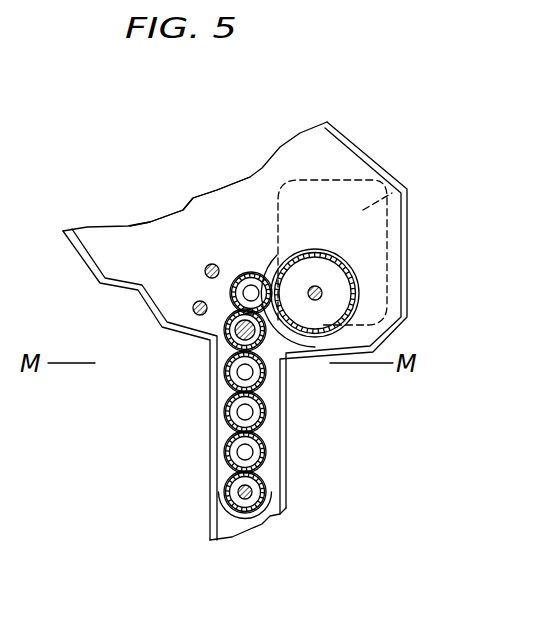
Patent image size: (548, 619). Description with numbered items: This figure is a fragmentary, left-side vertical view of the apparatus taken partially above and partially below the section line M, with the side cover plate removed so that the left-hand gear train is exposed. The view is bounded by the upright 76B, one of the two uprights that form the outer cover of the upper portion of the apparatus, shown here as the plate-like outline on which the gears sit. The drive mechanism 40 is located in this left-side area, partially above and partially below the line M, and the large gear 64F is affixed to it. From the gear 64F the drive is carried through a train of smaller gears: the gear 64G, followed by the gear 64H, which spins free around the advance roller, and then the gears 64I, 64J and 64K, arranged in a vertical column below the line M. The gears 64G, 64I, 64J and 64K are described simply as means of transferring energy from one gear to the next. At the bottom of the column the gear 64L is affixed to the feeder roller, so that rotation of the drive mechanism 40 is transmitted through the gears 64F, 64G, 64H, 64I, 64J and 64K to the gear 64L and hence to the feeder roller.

The drive mechanism 40 is at (402, 196).
The upright 76B is at (252, 180).
The gear 64F is at (297, 268).
The gear 64G is at (230, 289).
The gear 64H is at (238, 338).
The gear 64I is at (257, 373).
The gear 64J is at (257, 413).
The gear 64K is at (257, 452).
The gear 64L is at (257, 491).